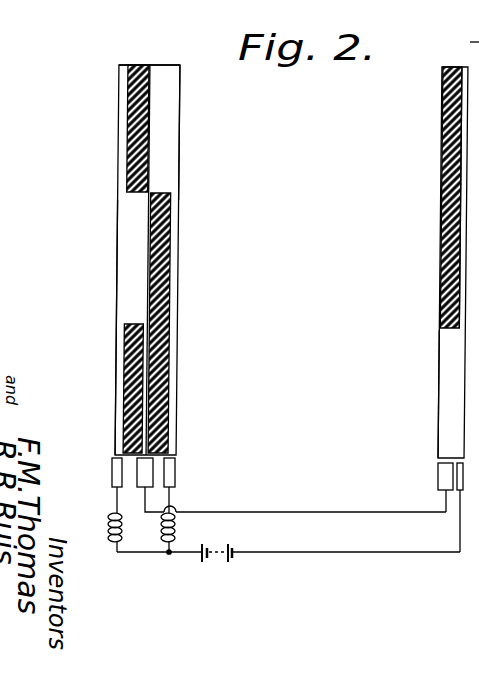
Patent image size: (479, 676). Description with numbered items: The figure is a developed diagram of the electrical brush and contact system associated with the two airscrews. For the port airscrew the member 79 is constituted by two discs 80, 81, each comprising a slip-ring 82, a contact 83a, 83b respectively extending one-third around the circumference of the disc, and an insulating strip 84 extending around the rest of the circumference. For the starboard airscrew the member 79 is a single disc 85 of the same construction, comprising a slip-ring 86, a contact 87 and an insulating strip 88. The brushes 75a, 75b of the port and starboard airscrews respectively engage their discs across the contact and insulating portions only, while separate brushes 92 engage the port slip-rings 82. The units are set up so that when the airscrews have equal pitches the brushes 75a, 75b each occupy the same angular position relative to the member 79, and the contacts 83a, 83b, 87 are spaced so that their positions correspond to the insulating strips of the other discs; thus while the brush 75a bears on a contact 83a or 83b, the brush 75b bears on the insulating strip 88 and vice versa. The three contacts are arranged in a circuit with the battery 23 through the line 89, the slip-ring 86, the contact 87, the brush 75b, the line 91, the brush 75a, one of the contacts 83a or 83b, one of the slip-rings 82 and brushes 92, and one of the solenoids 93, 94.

The member 79 is at (132, 260).
The disc 80 is at (119, 65).
The disc 81 is at (173, 64).
The slip-ring 82 is at (118, 183).
The contact 83a is at (116, 288).
The contact 83b is at (168, 93).
The insulating strip 84 is at (138, 65).
The disc 85 is at (460, 67).
The slip-ring 86 is at (468, 148).
The contact 87 is at (438, 432).
The insulating strip 88 is at (445, 110).
The line 89 is at (395, 552).
The line 91 is at (362, 512).
The brush 92 is at (112, 460).
The solenoid 93 is at (110, 533).
The solenoid 94 is at (175, 528).
The battery 23 is at (214, 549).
The brush 75a is at (153, 472).
The brush 75b is at (438, 472).